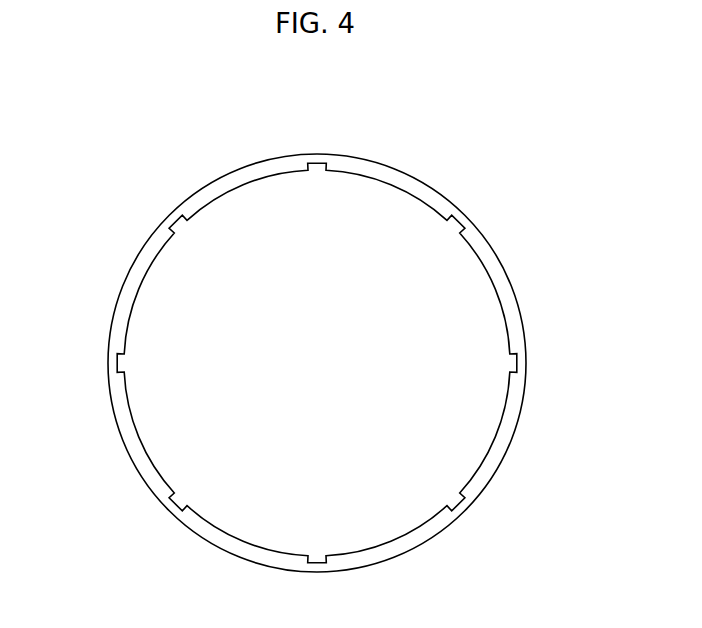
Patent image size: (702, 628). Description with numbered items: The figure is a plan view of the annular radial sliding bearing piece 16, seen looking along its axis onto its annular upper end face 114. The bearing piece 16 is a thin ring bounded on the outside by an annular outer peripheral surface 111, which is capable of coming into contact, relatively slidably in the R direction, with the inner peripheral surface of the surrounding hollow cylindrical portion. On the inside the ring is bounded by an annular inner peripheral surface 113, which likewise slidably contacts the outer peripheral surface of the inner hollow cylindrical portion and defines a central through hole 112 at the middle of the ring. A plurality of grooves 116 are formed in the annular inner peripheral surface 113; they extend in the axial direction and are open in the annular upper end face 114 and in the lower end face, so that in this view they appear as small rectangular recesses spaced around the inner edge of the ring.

The annular radial sliding bearing piece 16 is at (127, 483).
The annular outer peripheral surface 111 is at (498, 251).
The central through hole 112 is at (335, 383).
The annular inner peripheral surface 113 is at (131, 310).
The annular upper end face 114 is at (239, 177).
The grooves 116 is at (317, 170).